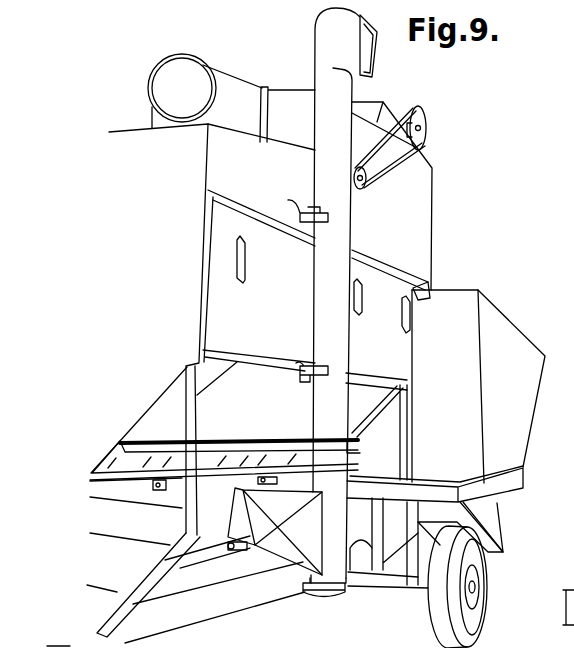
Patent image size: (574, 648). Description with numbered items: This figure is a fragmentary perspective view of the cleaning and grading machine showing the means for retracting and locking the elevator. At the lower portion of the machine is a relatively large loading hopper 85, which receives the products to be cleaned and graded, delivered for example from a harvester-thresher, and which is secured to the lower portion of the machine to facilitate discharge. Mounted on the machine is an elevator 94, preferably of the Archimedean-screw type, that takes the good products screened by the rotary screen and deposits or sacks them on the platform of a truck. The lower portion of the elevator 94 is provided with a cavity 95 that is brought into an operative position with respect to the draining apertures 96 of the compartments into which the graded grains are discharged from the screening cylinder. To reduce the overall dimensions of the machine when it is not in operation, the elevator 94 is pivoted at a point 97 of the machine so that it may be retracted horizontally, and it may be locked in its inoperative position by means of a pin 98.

The loading hopper 85 is at (476, 437).
The elevator 94 is at (322, 297).
The cavity 95 is at (275, 531).
The draining apertures 96 is at (180, 463).
The pivot point 97 is at (306, 363).
The pin 98 is at (296, 205).